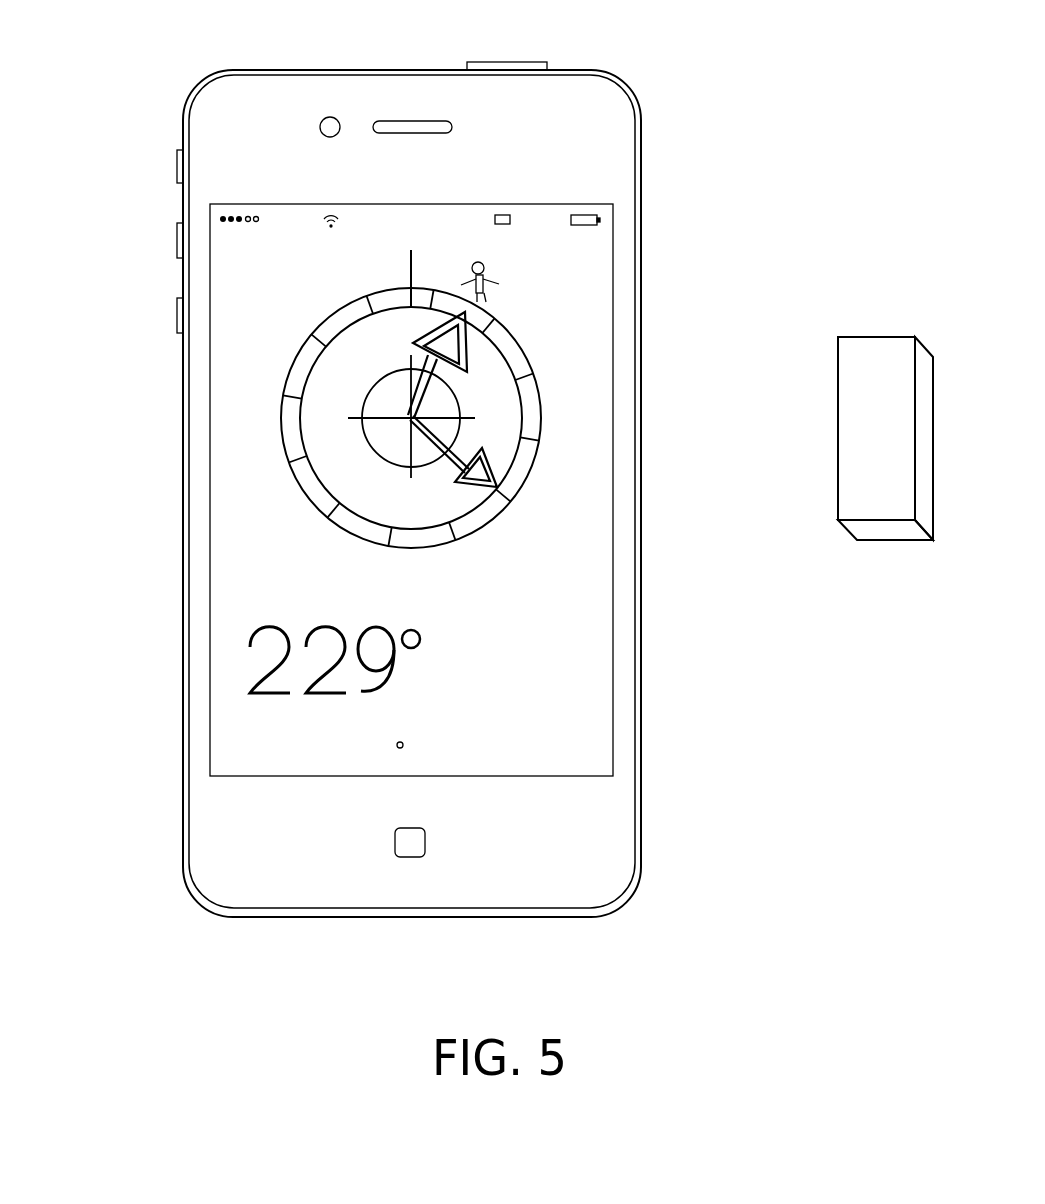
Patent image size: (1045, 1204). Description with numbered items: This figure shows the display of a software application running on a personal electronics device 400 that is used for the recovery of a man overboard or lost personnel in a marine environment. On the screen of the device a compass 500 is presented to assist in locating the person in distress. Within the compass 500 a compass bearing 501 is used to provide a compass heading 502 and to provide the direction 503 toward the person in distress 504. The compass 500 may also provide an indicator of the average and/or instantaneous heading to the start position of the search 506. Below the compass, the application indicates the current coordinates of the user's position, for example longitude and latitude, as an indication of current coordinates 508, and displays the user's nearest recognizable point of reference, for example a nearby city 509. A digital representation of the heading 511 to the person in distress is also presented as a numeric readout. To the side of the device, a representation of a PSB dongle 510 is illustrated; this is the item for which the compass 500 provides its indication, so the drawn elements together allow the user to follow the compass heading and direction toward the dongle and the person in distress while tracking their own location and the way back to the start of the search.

The personal electronics device 400 is at (126, 899).
The compass 500 is at (272, 402).
The compass bearing 501 is at (452, 434).
The compass heading 502 is at (412, 255).
The direction 503 is at (466, 338).
The person in distress 504 is at (490, 282).
The indicator of heading to start position of the search 506 is at (524, 507).
The indication of current coordinates 508 is at (495, 725).
The nearby city 509 is at (523, 670).
The PSB dongle 510 is at (868, 340).
The digital representation of the heading 511 is at (268, 683).